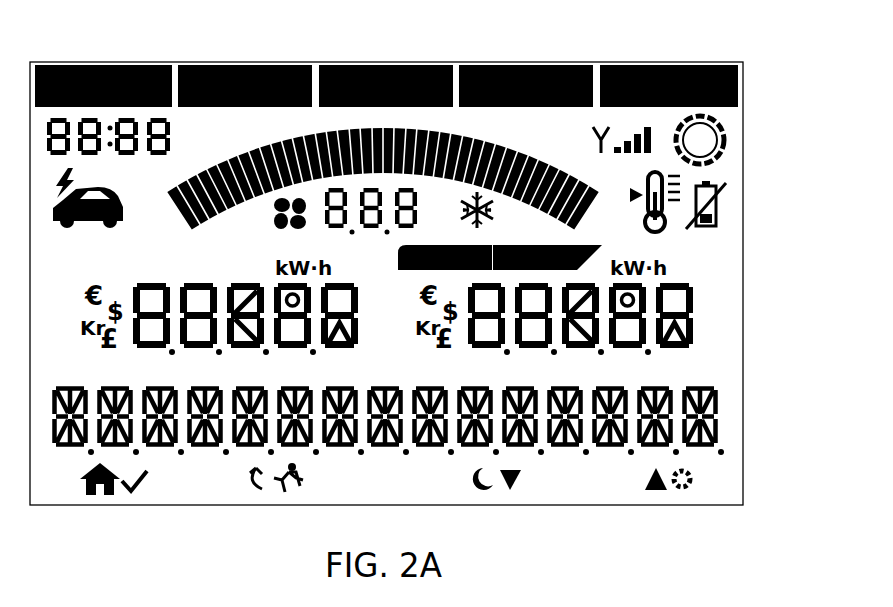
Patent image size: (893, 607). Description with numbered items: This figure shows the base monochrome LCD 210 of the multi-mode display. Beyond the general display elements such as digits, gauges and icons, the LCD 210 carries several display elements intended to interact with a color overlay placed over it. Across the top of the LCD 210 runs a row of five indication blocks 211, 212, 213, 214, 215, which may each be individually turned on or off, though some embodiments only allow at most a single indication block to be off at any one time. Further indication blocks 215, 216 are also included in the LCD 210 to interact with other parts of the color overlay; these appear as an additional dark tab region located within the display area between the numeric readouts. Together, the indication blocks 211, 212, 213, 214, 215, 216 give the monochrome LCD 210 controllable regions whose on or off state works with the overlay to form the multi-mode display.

The base monochrome LCD 210 is at (743, 210).
The indication block 211 is at (135, 90).
The indication block 212 is at (283, 90).
The indication block 213 is at (423, 90).
The indication block 214 is at (558, 90).
The indication block 215 is at (692, 90).
The indication block 216 is at (468, 268).